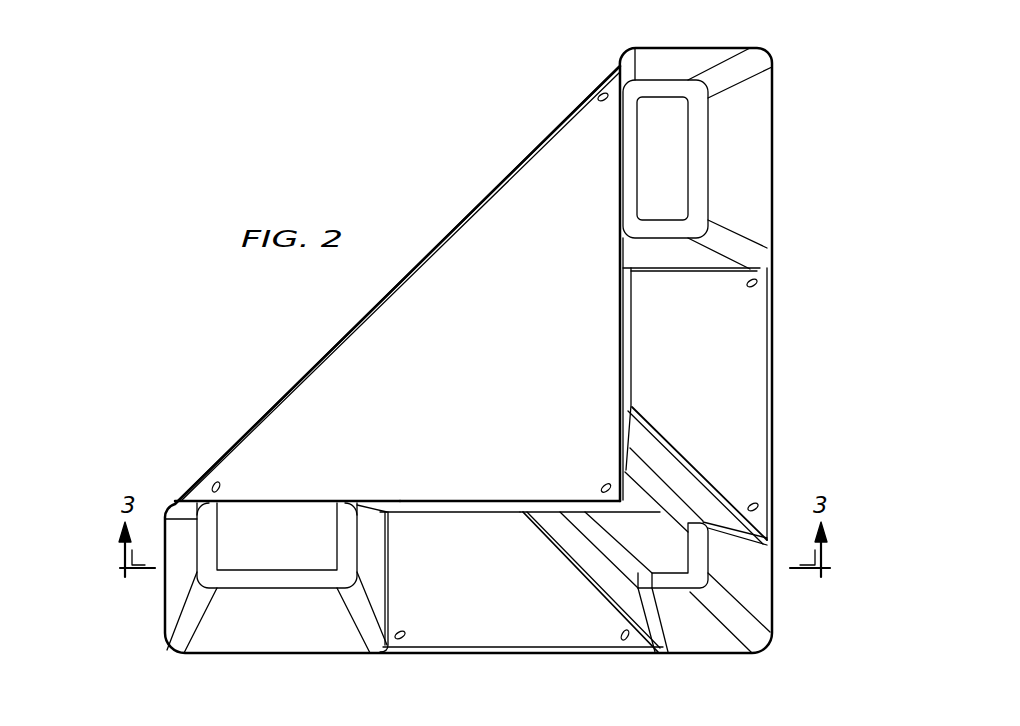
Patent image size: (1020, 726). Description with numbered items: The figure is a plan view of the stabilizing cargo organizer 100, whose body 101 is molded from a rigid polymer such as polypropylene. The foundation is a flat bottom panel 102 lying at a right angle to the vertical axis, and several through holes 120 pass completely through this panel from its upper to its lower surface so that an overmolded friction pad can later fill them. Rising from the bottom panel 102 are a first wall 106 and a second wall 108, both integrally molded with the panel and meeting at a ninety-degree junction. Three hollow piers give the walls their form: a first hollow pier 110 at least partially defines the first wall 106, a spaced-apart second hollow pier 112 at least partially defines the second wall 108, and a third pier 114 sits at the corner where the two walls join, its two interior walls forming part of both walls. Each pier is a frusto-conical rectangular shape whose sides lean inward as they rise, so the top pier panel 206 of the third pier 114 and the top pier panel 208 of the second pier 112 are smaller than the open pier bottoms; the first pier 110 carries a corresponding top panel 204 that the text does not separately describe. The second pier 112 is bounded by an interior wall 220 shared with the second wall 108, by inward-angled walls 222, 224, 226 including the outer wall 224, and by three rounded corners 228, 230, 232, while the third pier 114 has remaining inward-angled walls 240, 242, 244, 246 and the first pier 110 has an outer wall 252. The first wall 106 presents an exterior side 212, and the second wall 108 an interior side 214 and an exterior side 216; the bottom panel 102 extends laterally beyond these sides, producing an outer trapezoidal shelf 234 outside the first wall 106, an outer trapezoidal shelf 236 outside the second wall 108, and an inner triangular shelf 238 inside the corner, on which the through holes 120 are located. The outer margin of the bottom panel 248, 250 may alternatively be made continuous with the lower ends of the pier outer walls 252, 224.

The organizer 100 is at (255, 327).
The body 101 is at (760, 100).
The bottom panel 102 is at (440, 268).
The first wall 106 is at (623, 368).
The second wall 108 is at (452, 512).
The first hollow pier 110 is at (745, 140).
The second hollow pier 112 is at (290, 632).
The third pier 114 is at (760, 605).
The through holes 120 is at (598, 95).
The first pocket 204 is at (680, 167).
The top pier panel 206 is at (665, 532).
The top pier panel 208 is at (294, 548).
The exterior side 212 is at (625, 338).
The interior side 214 is at (470, 500).
The exterior side 216 is at (619, 325).
The interior wall 220 is at (280, 500).
The wall 222 is at (390, 570).
The outer wall 224 is at (233, 640).
The wall 226 is at (175, 587).
The rounded corner 228 is at (383, 653).
The rounded corner 230 is at (176, 638).
The rounded corner 232 is at (172, 502).
The outer trapezoidal shelf 234 is at (755, 402).
The outer trapezoidal shelf 236 is at (508, 632).
The inner triangular shelf 238 is at (375, 335).
The wall 240 is at (600, 572).
The wall 242 is at (700, 635).
The wall 244 is at (757, 588).
The wall 246 is at (677, 467).
The outer margin of the bottom panel 248 is at (775, 340).
The outer margin of the bottom panel 250 is at (592, 655).
The outer wall 252 is at (755, 178).